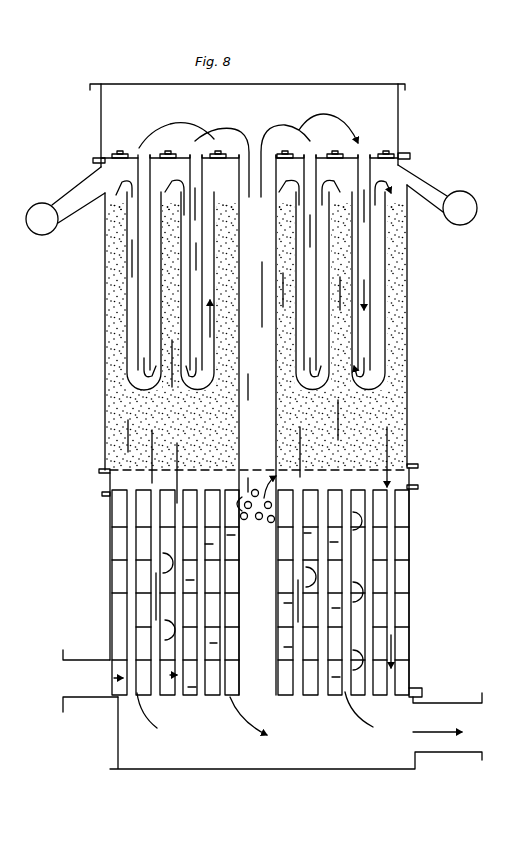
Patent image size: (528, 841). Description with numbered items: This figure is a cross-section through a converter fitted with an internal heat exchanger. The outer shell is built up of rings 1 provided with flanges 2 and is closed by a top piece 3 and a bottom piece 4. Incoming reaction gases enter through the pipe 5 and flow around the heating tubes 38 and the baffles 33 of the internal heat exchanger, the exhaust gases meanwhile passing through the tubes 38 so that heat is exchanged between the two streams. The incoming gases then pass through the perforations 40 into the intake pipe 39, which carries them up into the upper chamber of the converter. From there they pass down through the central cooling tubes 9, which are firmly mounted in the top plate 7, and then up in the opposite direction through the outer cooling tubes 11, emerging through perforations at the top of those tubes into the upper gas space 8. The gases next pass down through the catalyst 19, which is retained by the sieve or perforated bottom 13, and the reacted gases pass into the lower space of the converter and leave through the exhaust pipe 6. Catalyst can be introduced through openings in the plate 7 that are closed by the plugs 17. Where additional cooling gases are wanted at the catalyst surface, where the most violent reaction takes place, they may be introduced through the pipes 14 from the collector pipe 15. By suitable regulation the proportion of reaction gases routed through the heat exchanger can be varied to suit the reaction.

The rings 1 is at (399, 99).
The flanges 2 is at (407, 154).
The top piece 3 is at (113, 84).
The bottom piece 4 is at (209, 760).
The pipe 5 is at (77, 682).
The exhaust pipe 6 is at (457, 703).
The top plate 7 is at (382, 150).
The upper gas space 8 is at (118, 172).
The central cooling tubes 9 is at (140, 323).
The outer cooling tubes 11 is at (128, 293).
The sieve or perforated bottom 13 is at (130, 477).
The pipes 14 is at (70, 198).
The collector pipe 15 is at (30, 222).
The plugs 17 is at (122, 154).
The catalyst 19 is at (408, 412).
The baffles 33 is at (121, 597).
The tubes 38 is at (133, 562).
The intake pipe 39 is at (248, 404).
The perforations 40 is at (256, 525).